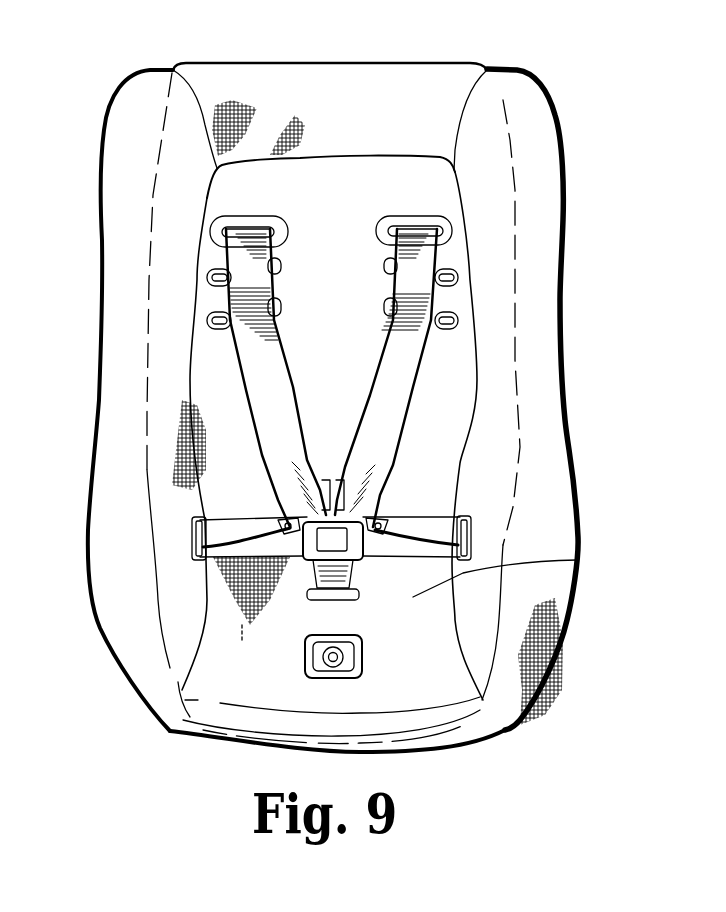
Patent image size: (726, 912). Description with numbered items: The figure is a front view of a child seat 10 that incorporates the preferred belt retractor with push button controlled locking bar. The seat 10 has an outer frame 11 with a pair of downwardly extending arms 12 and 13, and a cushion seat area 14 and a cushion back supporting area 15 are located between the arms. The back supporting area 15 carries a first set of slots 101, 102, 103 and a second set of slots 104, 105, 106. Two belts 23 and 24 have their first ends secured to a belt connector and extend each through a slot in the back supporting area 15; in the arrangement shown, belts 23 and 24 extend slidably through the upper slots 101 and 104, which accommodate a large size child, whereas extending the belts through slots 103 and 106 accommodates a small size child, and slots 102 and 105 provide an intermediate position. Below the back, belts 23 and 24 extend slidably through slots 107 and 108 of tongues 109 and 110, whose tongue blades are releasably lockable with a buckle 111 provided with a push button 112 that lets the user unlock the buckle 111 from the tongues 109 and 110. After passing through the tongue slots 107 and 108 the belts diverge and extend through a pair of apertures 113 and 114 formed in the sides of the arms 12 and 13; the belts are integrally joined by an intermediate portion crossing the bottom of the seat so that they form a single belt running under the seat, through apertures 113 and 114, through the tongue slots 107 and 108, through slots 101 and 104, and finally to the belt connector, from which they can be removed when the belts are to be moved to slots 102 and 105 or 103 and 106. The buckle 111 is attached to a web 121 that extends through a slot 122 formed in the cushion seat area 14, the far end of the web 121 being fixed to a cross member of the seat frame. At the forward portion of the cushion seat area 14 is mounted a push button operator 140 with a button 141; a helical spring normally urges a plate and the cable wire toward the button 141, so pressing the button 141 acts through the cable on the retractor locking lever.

The seat 10 is at (593, 60).
The outer frame 11 is at (124, 196).
The downwardly extending arm 12 is at (142, 665).
The downwardly extending arm 13 is at (508, 677).
The cushion seat area 14 is at (577, 560).
The cushion back supporting area 15 is at (330, 175).
The belt 23 is at (233, 222).
The belt 24 is at (437, 222).
The slot 101 is at (288, 221).
The slot 102 is at (281, 265).
The slot 103 is at (282, 311).
The slot 104 is at (375, 220).
The slot 105 is at (386, 265).
The slot 106 is at (388, 306).
The slot 107 is at (325, 470).
The slot 108 is at (343, 468).
The tongue 109 is at (268, 538).
The tongue 110 is at (420, 537).
The buckle 111 is at (311, 553).
The push button 112 is at (342, 548).
The aperture 113 is at (194, 520).
The aperture 114 is at (472, 520).
The web 121 is at (352, 583).
The slot 122 is at (360, 598).
The push button operator 140 is at (360, 666).
The button 141 is at (323, 657).